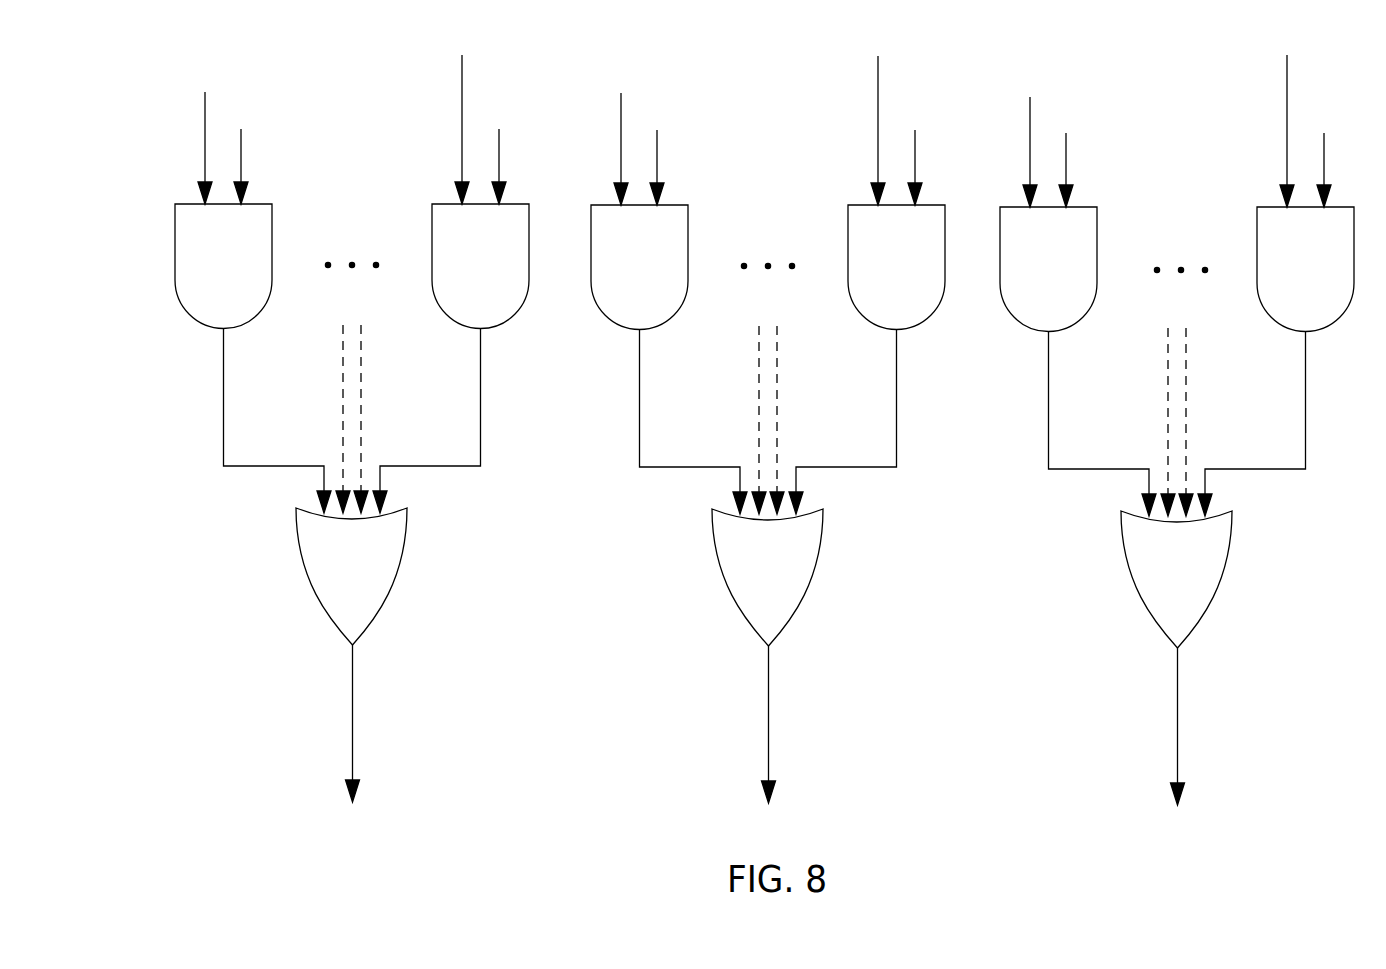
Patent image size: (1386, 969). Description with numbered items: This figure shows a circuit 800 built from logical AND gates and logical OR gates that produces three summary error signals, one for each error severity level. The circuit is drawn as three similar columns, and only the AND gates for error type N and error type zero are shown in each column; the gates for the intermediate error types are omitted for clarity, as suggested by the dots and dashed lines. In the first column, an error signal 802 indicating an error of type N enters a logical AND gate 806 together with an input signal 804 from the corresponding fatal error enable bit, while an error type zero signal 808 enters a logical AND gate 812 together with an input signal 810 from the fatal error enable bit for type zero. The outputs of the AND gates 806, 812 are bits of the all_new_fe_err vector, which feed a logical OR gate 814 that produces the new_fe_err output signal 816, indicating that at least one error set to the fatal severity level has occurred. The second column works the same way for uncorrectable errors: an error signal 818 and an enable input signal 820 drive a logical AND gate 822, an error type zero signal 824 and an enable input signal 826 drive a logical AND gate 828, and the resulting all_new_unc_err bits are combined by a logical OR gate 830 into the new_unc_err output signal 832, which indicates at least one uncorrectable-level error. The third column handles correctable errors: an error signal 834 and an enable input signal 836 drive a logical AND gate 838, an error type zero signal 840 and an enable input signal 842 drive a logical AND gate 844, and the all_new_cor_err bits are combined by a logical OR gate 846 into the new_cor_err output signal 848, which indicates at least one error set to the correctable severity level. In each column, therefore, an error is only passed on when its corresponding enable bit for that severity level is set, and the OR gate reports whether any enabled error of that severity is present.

The logic circuit 800 is at (278, 708).
The error signal 802 is at (195, 132).
The input signal 804 is at (247, 151).
The logical AND gate 806 is at (253, 358).
The error type 0 signal 808 is at (440, 129).
The input signal 810 is at (495, 151).
The logical AND gate 812 is at (451, 358).
The logical OR gate 814 is at (351, 576).
The new_fe_err output signal 816 is at (377, 723).
The error signal 818 is at (617, 132).
The input signal 820 is at (666, 151).
The logical AND gate 822 is at (669, 359).
The error type 0 signal 824 is at (853, 130).
The input signal 826 is at (912, 151).
The logical AND gate 828 is at (867, 359).
The logical OR gate 830 is at (767, 577).
The new_unc_err output signal 832 is at (793, 724).
The error signal 834 is at (1031, 132).
The input signal 836 is at (1068, 154).
The logical AND gate 838 is at (1078, 361).
The error type 0 signal 840 is at (1264, 131).
The input signal 842 is at (1320, 154).
The logical AND gate 844 is at (1276, 361).
The logical OR gate 846 is at (1176, 579).
The new_cor_err output signal 848 is at (1202, 726).